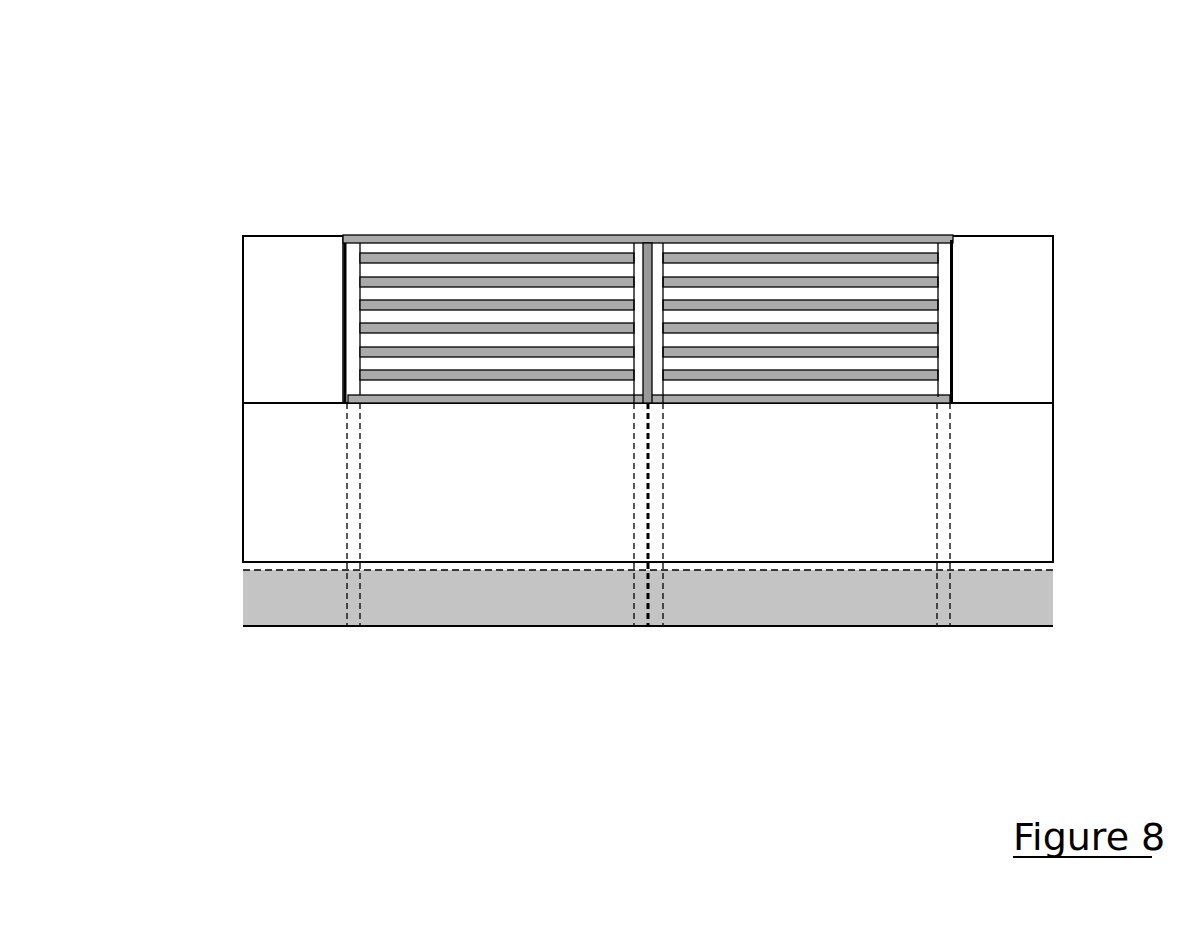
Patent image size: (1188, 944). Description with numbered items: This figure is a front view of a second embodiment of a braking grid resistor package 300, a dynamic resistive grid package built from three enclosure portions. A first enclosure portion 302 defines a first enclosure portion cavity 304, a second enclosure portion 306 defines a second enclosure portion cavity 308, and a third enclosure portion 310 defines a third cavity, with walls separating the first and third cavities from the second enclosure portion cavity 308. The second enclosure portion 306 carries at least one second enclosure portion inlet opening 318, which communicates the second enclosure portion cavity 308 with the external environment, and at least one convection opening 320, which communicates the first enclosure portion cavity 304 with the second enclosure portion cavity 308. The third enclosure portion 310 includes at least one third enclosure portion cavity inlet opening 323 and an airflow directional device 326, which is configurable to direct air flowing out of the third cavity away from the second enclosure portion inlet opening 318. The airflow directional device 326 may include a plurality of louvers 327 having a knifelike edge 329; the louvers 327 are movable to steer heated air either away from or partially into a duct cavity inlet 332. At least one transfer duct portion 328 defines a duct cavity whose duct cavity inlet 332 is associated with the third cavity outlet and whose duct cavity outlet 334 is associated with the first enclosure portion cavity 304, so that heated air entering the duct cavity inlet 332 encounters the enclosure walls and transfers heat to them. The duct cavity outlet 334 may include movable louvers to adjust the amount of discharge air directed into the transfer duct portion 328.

The braking grid resistor package 300 is at (992, 82).
The first enclosure portion 302 is at (648, 689).
The first enclosure portion cavity 304 is at (648, 598).
The second enclosure portion 306 is at (578, 564).
The second enclosure portion cavity 308 is at (475, 502).
The third enclosure portion 310 is at (577, 319).
The second enclosure portion inlet opening 318 is at (587, 482).
The convection opening 320 is at (656, 641).
The third enclosure portion cavity inlet opening 323 is at (293, 265).
The airflow directional device 326 is at (761, 260).
The louvers 327 is at (800, 255).
The transfer duct portion 328 is at (1044, 383).
The knifelike edge 329 is at (682, 267).
The duct cavity inlet 332 is at (912, 333).
The duct cavity outlet 334 is at (886, 557).